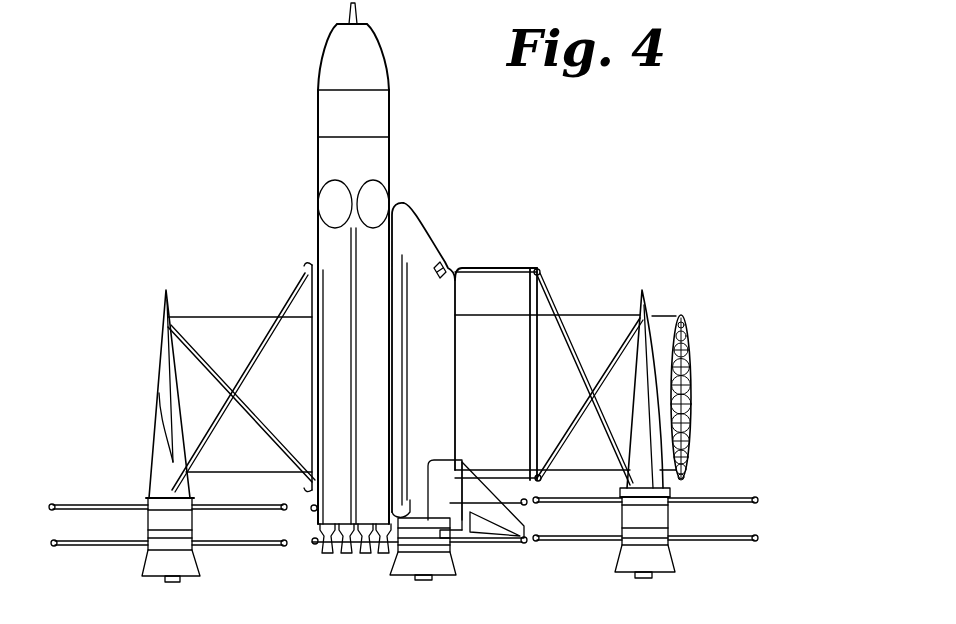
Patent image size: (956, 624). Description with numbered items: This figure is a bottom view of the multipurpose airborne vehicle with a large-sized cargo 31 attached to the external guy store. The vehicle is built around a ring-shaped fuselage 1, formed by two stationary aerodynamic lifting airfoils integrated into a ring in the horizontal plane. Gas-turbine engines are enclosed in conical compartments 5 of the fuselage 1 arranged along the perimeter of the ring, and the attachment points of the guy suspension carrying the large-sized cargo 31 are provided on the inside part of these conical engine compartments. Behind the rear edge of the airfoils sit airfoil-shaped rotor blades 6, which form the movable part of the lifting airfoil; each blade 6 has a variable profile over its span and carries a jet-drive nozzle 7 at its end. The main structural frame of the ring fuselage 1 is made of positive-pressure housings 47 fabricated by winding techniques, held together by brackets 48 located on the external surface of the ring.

The fuselage 1 is at (663, 316).
The large-sized cargo 31 is at (386, 150).
The conical compartment 5 is at (160, 447).
The rotor blade 6 is at (716, 498).
The nozzle 7 is at (755, 500).
The housing 47 is at (692, 370).
The bracket 48 is at (692, 383).